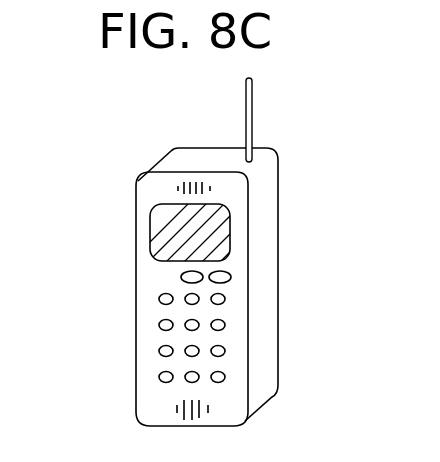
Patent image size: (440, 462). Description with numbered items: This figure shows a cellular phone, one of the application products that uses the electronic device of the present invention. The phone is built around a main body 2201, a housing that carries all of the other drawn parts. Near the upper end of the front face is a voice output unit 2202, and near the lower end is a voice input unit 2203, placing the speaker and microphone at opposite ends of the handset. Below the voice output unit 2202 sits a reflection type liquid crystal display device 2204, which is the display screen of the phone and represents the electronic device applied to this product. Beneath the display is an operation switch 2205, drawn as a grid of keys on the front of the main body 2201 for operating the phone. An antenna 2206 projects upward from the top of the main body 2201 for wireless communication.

The main body 2201 is at (175, 162).
The voice output unit 2202 is at (178, 188).
The voice input unit 2203 is at (177, 410).
The reflection type liquid crystal display device 2204 is at (154, 238).
The operation switch 2205 is at (182, 277).
The antenna 2206 is at (253, 120).